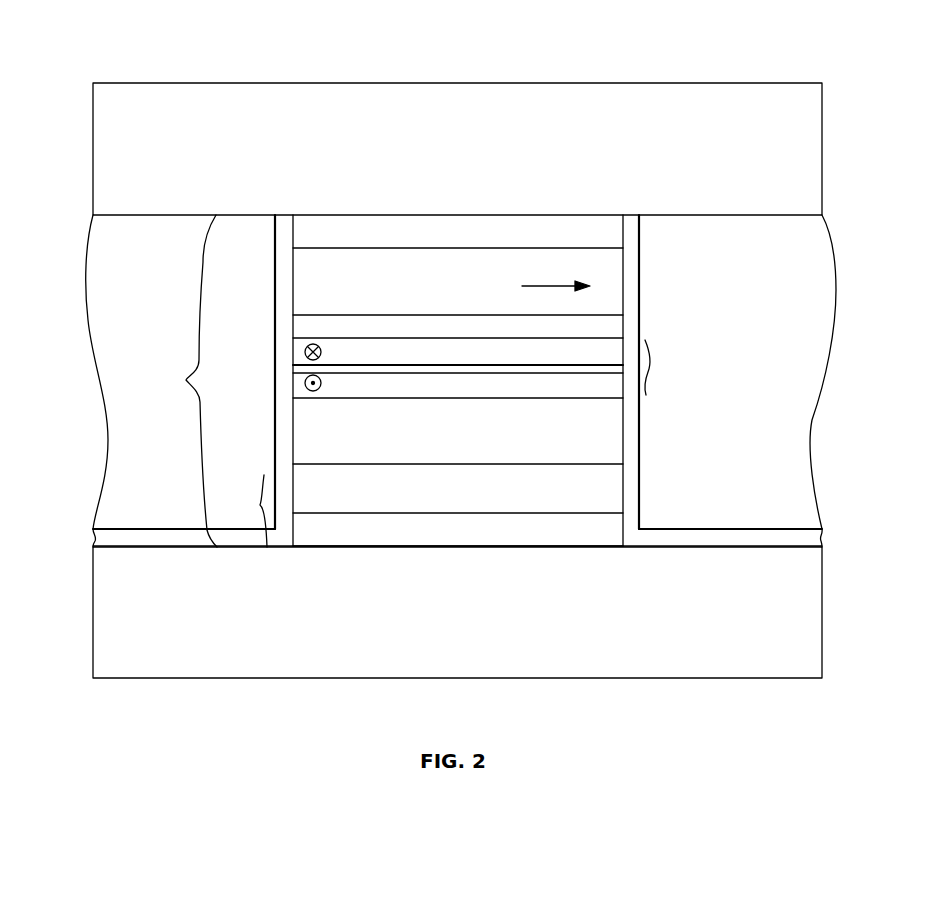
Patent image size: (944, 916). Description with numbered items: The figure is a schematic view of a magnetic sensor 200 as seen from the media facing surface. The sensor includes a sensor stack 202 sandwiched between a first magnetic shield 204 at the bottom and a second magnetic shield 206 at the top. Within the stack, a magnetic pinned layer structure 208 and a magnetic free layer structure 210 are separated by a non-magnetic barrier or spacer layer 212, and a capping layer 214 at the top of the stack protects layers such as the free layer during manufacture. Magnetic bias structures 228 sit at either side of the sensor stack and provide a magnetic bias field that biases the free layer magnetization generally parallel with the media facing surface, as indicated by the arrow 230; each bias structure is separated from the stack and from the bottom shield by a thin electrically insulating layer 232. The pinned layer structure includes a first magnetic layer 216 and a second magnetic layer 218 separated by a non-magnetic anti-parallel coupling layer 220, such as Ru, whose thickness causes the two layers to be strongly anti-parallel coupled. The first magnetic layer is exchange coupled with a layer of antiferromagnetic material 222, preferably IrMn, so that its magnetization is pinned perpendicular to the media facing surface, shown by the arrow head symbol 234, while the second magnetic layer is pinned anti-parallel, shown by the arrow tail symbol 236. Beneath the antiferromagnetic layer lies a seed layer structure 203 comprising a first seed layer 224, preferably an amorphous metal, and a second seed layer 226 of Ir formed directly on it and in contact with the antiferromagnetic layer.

The magnetic sensor 200 is at (458, 84).
The sensor stack 202 is at (203, 262).
The seed layer structure 203 is at (264, 478).
The first magnetic shield 204 is at (493, 613).
The second magnetic shield 206 is at (492, 150).
The magnetic pinned layer structure 208 is at (646, 395).
The magnetic free layer structure 210 is at (478, 278).
The non-magnetic barrier or spacer layer 212 is at (475, 326).
The capping layer 214 is at (478, 233).
The first magnetic layer 216 is at (475, 386).
The second magnetic layer 218 is at (475, 353).
The non-magnetic anti-parallel coupling layer 220 is at (515, 367).
The layer of antiferromagnetic material 222 is at (482, 431).
The first seed layer 224 is at (478, 529).
The second seed layer 226 is at (482, 490).
The magnetic bias structures 228 is at (142, 365).
The arrow 230 is at (570, 284).
The electrically insulating layer 232 is at (155, 538).
The arrow head symbol 234 is at (321, 383).
The arrow tail symbol 236 is at (321, 352).